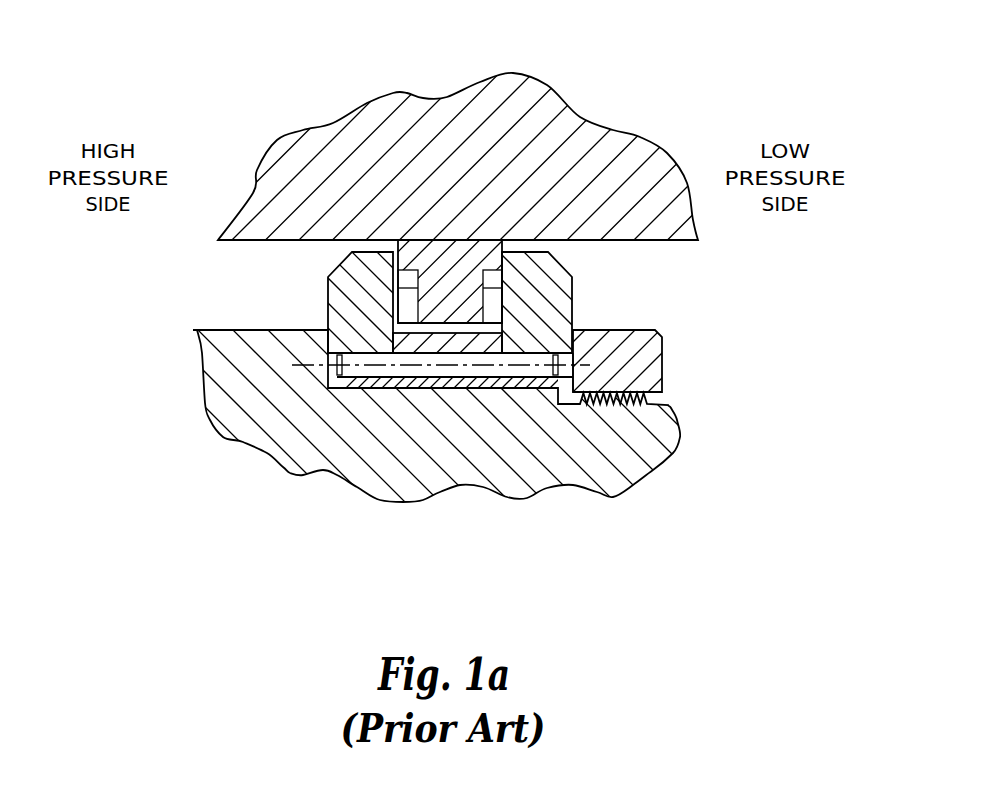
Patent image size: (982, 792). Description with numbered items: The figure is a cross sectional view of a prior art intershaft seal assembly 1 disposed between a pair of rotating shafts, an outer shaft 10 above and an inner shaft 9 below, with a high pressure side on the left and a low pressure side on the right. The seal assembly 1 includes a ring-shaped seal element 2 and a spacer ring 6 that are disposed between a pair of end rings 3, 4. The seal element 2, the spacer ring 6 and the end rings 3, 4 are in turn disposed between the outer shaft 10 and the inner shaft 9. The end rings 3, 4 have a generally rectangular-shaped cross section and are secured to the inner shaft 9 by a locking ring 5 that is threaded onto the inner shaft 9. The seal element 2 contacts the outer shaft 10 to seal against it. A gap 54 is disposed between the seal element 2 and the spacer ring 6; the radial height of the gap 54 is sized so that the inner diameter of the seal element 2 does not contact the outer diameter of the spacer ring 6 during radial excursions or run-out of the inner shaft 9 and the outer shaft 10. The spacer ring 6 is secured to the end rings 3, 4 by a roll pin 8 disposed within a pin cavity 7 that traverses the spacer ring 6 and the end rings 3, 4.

The intershaft seal assembly 1 is at (290, 282).
The seal element 2 is at (437, 263).
The end ring 3 is at (337, 318).
The end ring 4 is at (565, 288).
The locking ring 5 is at (650, 372).
The spacer ring 6 is at (412, 383).
The pin cavity 7 is at (333, 370).
The roll pin 8 is at (472, 370).
The inner shaft 9 is at (215, 360).
The outer shaft 10 is at (548, 110).
The gap 54 is at (472, 330).